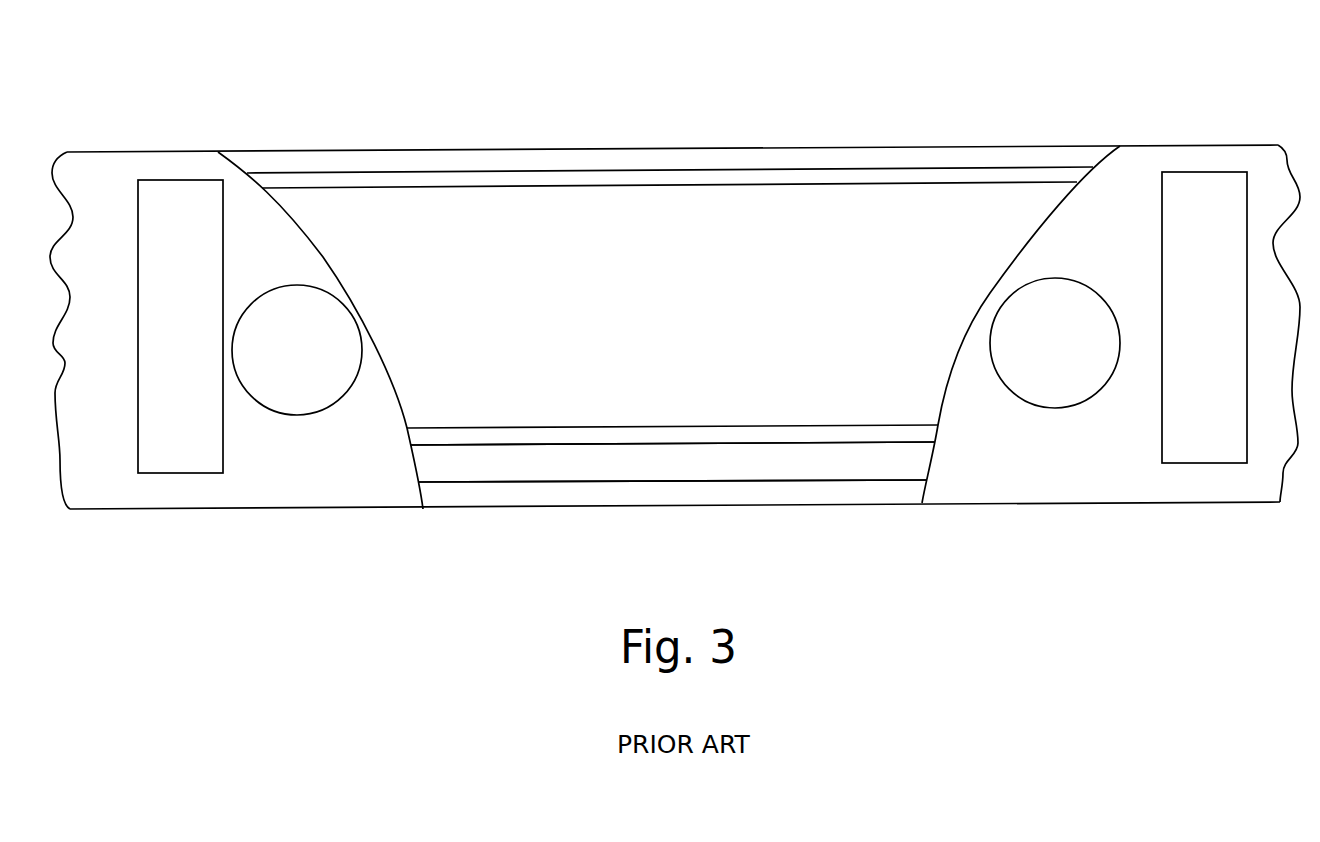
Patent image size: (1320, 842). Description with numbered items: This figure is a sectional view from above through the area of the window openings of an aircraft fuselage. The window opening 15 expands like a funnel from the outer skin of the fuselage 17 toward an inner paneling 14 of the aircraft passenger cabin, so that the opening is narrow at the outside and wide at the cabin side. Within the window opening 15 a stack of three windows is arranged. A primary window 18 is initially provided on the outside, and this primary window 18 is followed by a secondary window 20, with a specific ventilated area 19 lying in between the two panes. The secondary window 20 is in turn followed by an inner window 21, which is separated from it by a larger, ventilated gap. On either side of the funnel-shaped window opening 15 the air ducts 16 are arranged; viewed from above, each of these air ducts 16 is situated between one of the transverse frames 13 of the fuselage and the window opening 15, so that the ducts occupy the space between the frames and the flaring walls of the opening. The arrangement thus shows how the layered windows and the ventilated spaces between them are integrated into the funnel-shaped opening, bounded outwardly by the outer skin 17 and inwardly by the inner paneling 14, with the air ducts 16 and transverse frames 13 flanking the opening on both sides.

The transverse frame 13 is at (195, 445).
The inner paneling 14 is at (110, 152).
The window opening 15 is at (878, 210).
The air duct 16 is at (307, 320).
The outer skin of the fuselage 17 is at (378, 513).
The primary window 18 is at (745, 490).
The ventilated area 19 is at (580, 462).
The secondary window 20 is at (880, 430).
The inner window 21 is at (646, 160).